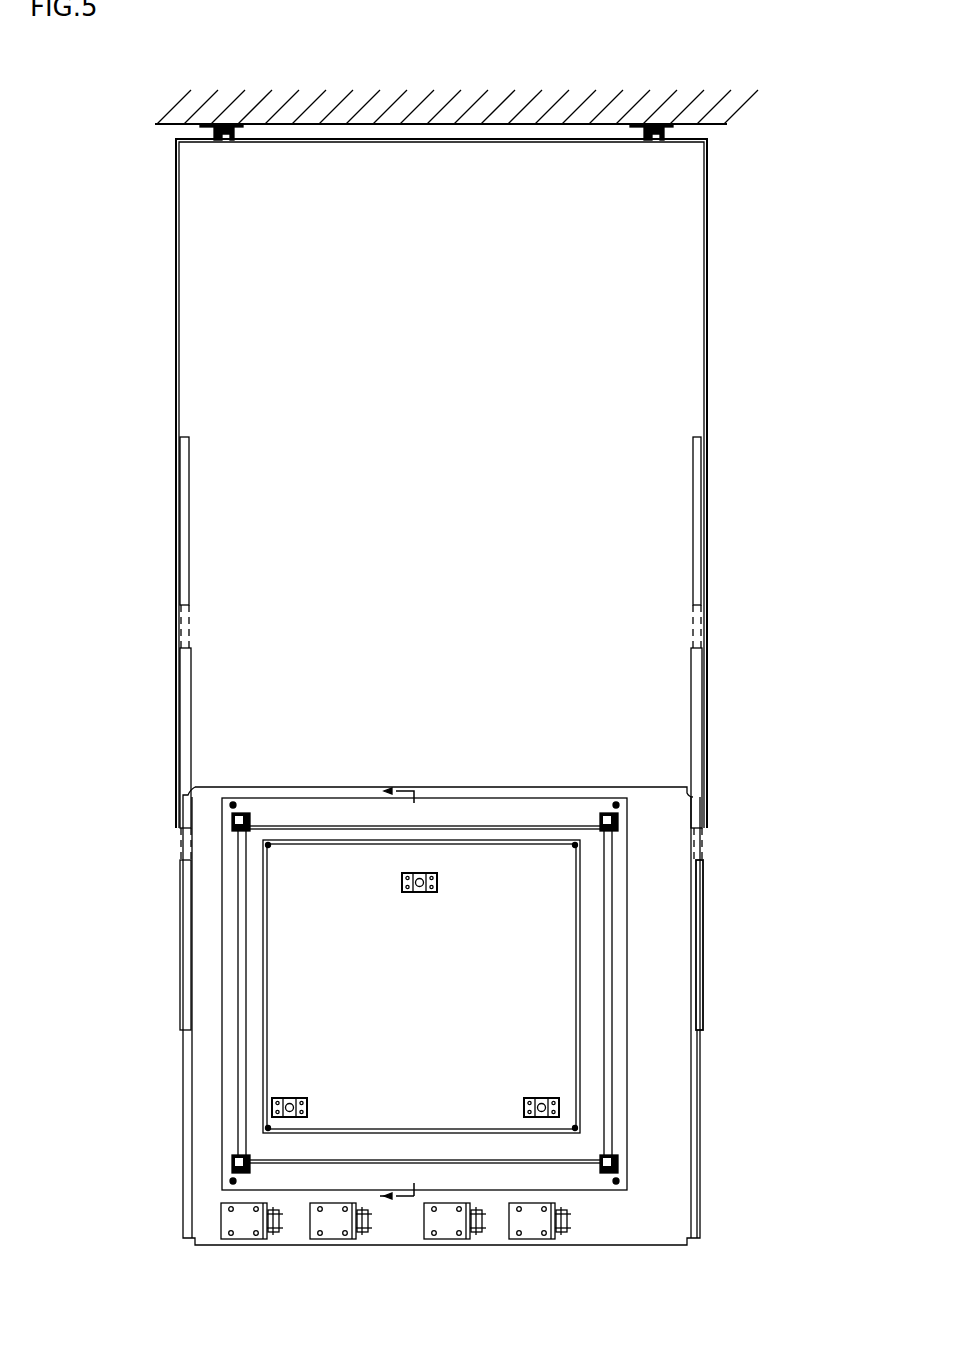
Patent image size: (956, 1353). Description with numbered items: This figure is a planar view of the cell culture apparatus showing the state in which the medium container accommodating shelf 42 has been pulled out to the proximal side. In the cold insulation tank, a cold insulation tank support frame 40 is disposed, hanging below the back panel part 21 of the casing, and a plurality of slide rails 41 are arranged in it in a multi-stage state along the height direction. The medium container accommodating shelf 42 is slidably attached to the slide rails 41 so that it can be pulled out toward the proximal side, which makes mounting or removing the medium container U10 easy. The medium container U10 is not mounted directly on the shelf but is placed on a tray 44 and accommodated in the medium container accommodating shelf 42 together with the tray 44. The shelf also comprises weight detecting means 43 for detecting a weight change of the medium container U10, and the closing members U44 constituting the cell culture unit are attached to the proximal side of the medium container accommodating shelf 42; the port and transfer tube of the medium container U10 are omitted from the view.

The back panel part 21 is at (456, 108).
The cold insulation tank support frame 40 is at (707, 285).
The slide rails 41 is at (705, 878).
The medium container accommodating shelf 42 is at (664, 1222).
The weight detecting means 43 is at (400, 880).
The tray 44 is at (258, 972).
The medium container U10 is at (540, 987).
The closing members U44 is at (255, 1225).